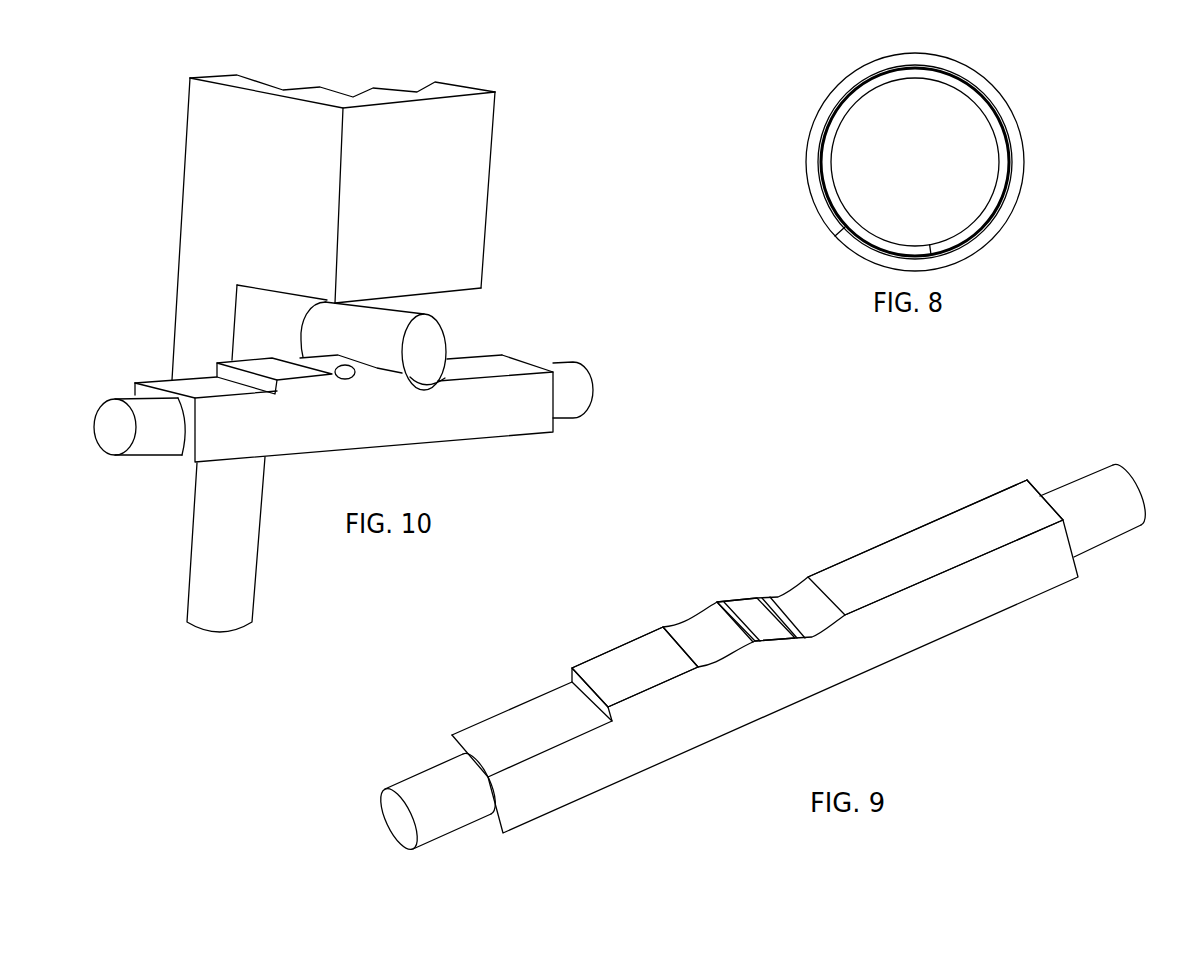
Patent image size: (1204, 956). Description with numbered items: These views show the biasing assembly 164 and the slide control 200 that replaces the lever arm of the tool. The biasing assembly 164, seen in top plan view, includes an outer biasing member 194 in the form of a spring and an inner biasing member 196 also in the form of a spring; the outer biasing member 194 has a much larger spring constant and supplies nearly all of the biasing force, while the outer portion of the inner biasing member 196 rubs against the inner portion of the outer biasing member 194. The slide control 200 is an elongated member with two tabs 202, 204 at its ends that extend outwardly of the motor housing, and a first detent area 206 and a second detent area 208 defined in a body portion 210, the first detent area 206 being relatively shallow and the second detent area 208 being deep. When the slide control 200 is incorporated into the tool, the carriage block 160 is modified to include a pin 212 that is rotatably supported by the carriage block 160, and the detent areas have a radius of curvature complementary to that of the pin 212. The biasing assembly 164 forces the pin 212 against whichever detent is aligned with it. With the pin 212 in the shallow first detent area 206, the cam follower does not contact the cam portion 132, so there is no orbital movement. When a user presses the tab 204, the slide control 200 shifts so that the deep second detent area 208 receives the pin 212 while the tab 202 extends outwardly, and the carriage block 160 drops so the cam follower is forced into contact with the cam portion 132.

In FIG. 10, the cam portion 132 is at (252, 600).
In FIG. 10, the carriage block 160 is at (490, 202).
In FIG. 8, the biasing assembly 164 is at (793, 112).
In FIG. 8, the outer biasing member 194 is at (813, 203).
In FIG. 8, the inner biasing member 196 is at (1005, 157).
In FIG. 9, the slide control 200 is at (807, 482).
In FIG. 10, the tab 202 is at (115, 456).
In FIG. 9, the tab 202 is at (437, 835).
In FIG. 10, the tab 204 is at (591, 369).
In FIG. 9, the tab 204 is at (1063, 486).
In FIG. 10, the first detent area 206 is at (373, 377).
In FIG. 9, the first detent area 206 is at (677, 632).
In FIG. 10, the second detent area 208 is at (443, 382).
In FIG. 9, the second detent area 208 is at (783, 610).
In FIG. 9, the body portion 210 is at (915, 530).
In FIG. 10, the pin 212 is at (447, 333).